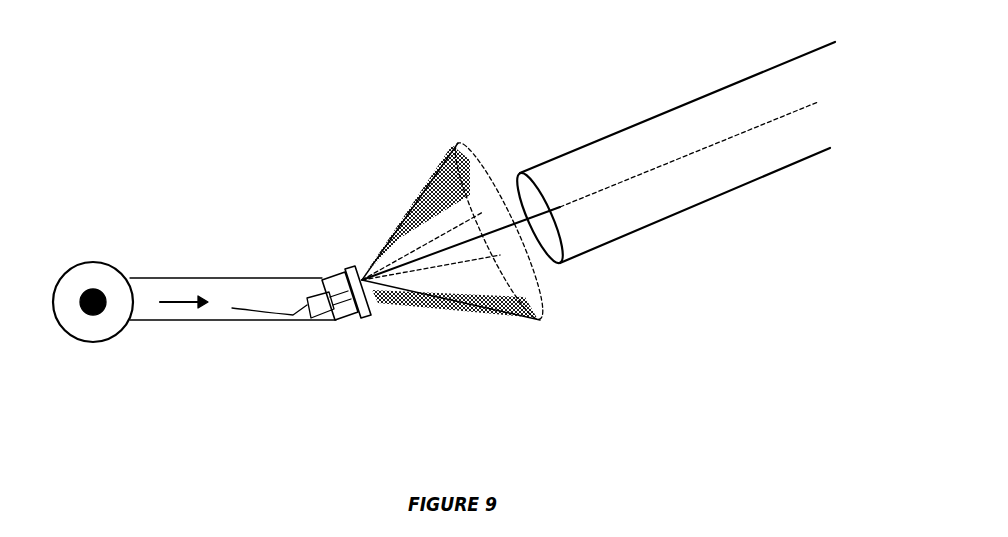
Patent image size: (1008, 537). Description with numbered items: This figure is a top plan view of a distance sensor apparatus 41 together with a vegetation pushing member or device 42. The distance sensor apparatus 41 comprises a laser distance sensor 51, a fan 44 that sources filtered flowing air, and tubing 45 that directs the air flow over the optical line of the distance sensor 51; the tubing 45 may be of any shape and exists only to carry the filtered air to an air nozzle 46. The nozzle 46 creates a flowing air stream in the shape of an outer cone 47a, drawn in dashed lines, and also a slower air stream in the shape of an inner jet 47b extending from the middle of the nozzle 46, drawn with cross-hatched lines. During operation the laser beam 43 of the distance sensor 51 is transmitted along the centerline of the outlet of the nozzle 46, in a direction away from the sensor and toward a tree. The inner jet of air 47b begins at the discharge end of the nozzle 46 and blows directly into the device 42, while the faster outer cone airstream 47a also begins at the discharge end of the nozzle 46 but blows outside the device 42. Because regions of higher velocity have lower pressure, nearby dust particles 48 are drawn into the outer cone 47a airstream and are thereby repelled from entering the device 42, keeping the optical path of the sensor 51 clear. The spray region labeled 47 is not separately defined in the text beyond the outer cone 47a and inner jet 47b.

The distance sensor apparatus 41 is at (286, 128).
The vegetation pushing member or device 42 is at (683, 101).
The laser beam 43 is at (703, 157).
The fan 44 is at (97, 280).
The tubing 45 is at (237, 285).
The air nozzle 46 is at (368, 313).
The spray cone 47 is at (457, 317).
The outer cone 47a is at (403, 198).
The inner jet 47b is at (452, 192).
The dust particles 48 is at (517, 317).
The laser distance sensor 51 is at (304, 322).